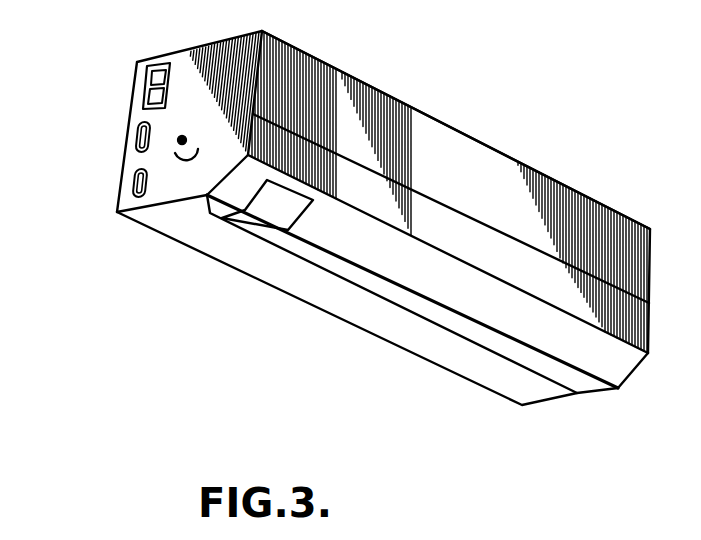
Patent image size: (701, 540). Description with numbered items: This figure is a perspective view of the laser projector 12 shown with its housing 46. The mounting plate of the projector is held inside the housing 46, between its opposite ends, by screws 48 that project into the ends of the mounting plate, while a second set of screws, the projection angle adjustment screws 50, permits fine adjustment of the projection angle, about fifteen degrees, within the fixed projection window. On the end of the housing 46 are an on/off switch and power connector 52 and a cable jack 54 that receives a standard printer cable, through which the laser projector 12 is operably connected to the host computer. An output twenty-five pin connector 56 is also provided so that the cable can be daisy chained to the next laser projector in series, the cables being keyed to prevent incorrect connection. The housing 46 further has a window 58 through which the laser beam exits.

The laser projector 12 is at (420, 97).
The housing 46 is at (540, 170).
The screws 48 is at (178, 143).
The projection angle adjustment screws 50 is at (186, 166).
The on/off switch and power connector 52 is at (143, 97).
The cable jack 54 is at (137, 148).
The output 25 pin connector 56 is at (133, 193).
The window 58 is at (267, 213).